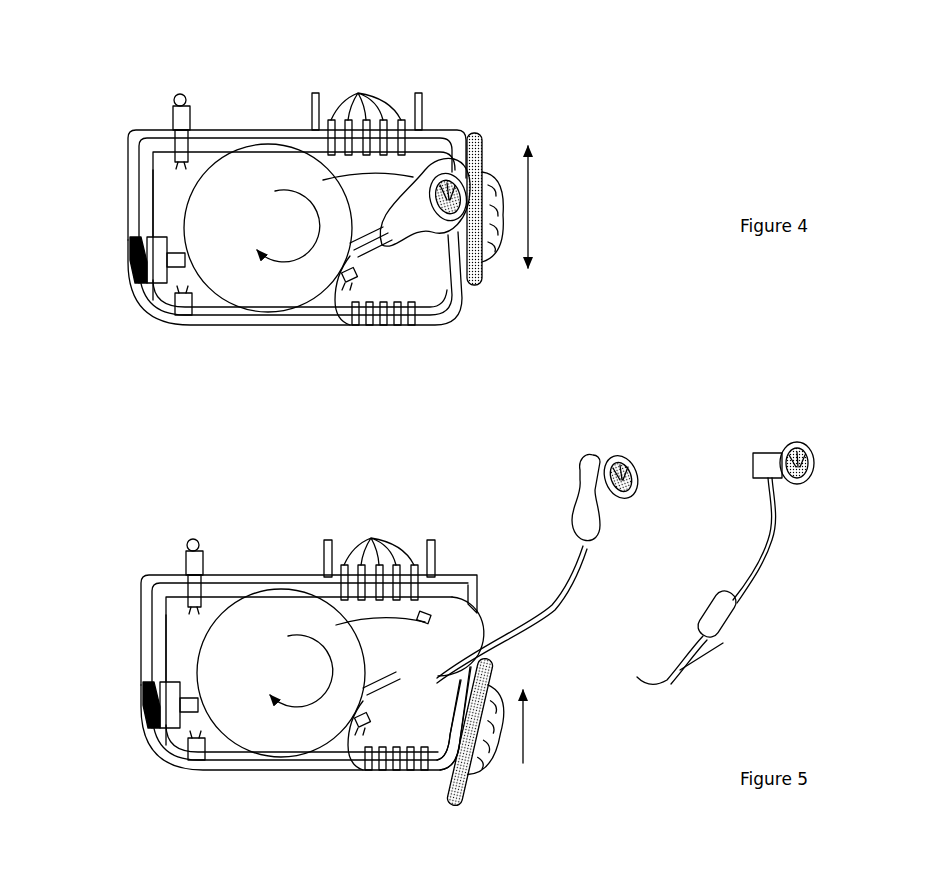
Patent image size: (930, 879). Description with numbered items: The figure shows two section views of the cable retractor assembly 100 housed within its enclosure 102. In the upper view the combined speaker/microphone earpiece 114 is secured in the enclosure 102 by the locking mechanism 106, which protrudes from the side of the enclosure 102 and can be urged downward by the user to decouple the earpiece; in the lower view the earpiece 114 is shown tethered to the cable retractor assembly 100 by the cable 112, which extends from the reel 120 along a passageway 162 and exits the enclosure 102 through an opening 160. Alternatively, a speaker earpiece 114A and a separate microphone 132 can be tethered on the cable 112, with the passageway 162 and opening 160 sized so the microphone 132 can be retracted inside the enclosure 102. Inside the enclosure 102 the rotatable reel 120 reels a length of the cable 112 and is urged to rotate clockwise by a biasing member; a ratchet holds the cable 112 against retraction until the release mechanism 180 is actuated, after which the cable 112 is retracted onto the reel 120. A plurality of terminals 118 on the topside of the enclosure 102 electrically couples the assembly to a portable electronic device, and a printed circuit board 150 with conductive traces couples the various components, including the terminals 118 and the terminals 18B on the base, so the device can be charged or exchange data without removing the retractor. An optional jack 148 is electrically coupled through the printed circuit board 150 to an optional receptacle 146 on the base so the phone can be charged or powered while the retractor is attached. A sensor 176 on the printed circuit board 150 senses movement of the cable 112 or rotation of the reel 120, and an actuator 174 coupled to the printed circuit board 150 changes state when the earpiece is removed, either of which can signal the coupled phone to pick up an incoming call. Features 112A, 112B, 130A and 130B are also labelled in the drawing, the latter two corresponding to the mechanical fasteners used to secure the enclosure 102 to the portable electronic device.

In FIG. 4, the cable retractor assembly 100 is at (107, 110).
In FIG. 5, the cable retractor assembly 100 is at (117, 557).
In FIG. 4, the enclosure 102 is at (317, 328).
In FIG. 5, the enclosure 102 is at (330, 773).
In FIG. 4, the locking mechanism 106 is at (488, 138).
In FIG. 4, the cable 112 is at (388, 257).
In FIG. 5, the cable 112 is at (530, 636).
In FIG. 5, the cable end post 112A is at (431, 530).
In FIG. 5, the cable end post 112B is at (326, 532).
In FIG. 4, the combined speaker/microphone earpiece 114 is at (449, 178).
In FIG. 5, the combined speaker/microphone earpiece 114 is at (638, 445).
In FIG. 5, the speaker earpiece 114A is at (798, 434).
In FIG. 4, the terminals 118 is at (358, 93).
In FIG. 5, the terminals 118 is at (371, 538).
In FIG. 4, the reel 120 is at (237, 267).
In FIG. 5, the reel 120 is at (248, 712).
In FIG. 4, the post 130A is at (421, 88).
In FIG. 4, the post 130B is at (312, 86).
In FIG. 5, the microphone 132 is at (742, 612).
In FIG. 4, the receptacle 146 is at (178, 325).
In FIG. 5, the receptacle 146 is at (187, 773).
In FIG. 4, the jack 148 is at (178, 88).
In FIG. 5, the jack 148 is at (191, 533).
In FIG. 4, the printed circuit board 150 is at (167, 188).
In FIG. 5, the printed circuit board 150 is at (182, 632).
In FIG. 5, the opening 160 is at (513, 630).
In FIG. 4, the passageway 162 is at (363, 257).
In FIG. 5, the passageway 162 is at (386, 709).
In FIG. 4, the actuator 174 is at (320, 177).
In FIG. 5, the actuator 174 is at (340, 630).
In FIG. 4, the sensor 176 is at (335, 315).
In FIG. 5, the sensor 176 is at (355, 770).
In FIG. 4, the release mechanism 180 is at (153, 258).
In FIG. 5, the release mechanism 180 is at (165, 705).
In FIG. 4, the terminals 18B is at (400, 332).
In FIG. 5, the terminals 18B is at (407, 780).